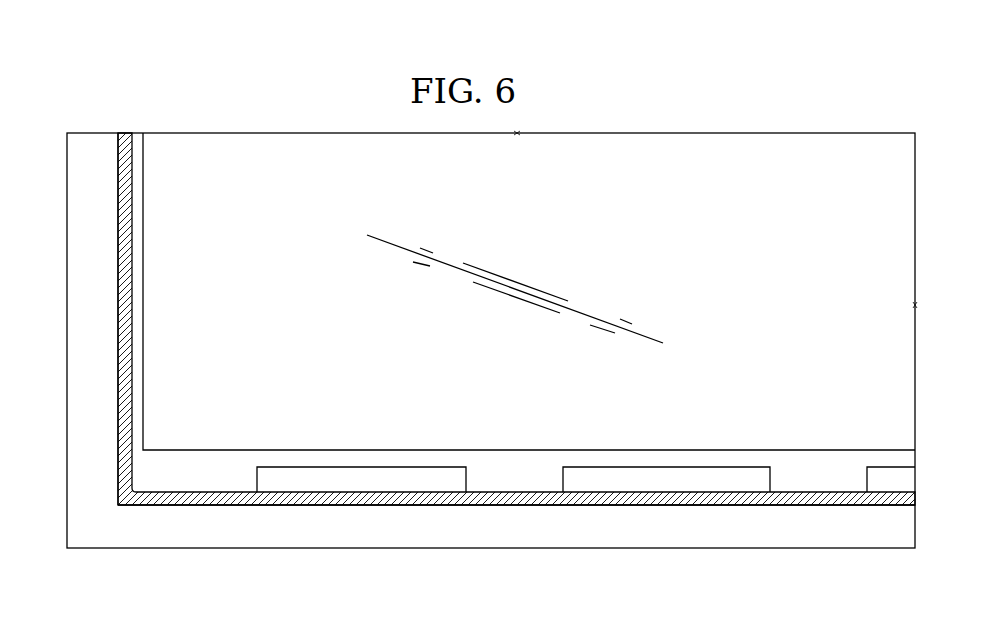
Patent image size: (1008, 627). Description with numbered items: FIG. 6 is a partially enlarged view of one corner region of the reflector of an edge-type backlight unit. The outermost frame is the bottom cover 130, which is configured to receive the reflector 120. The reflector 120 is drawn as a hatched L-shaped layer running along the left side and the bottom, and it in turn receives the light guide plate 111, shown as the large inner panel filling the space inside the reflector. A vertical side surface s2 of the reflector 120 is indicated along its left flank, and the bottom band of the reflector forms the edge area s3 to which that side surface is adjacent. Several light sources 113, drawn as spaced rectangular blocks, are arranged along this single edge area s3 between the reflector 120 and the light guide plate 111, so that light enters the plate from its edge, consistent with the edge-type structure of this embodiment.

The bottom cover 130 is at (133, 530).
The reflector 120 is at (238, 504).
The light guide plate 111 is at (160, 231).
The light sources 113 is at (610, 480).
The side surface s2 is at (120, 304).
The edge area s3 is at (742, 505).